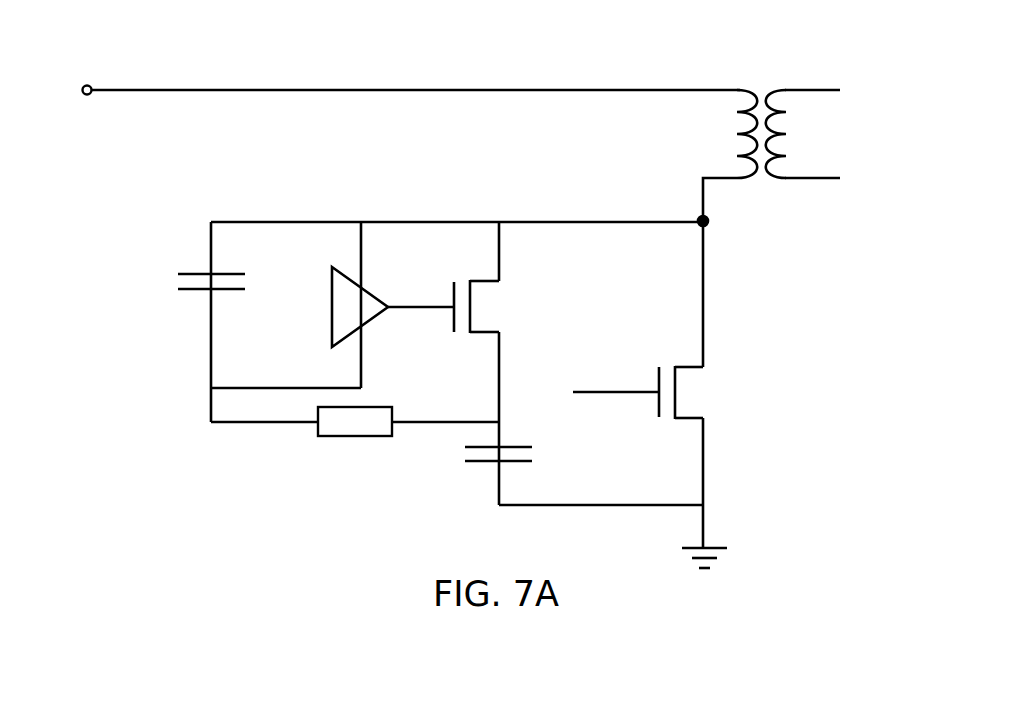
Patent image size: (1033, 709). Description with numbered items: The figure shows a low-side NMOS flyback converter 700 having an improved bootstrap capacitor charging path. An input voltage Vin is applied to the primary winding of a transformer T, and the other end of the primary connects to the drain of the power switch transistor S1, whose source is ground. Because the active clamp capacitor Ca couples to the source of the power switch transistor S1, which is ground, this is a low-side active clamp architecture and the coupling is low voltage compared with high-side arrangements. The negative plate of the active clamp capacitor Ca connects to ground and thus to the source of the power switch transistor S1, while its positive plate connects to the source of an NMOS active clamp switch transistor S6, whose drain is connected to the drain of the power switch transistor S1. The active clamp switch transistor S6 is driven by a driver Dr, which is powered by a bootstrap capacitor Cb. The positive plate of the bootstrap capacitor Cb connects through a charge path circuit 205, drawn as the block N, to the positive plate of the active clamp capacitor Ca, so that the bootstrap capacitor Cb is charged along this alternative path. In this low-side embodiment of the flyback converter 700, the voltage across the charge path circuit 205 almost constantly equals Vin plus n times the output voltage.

The flyback converter 700 is at (458, 62).
The charge path circuit 205 is at (355, 437).
The input voltage Vin is at (412, 73).
The transformer T is at (771, 137).
The bootstrap capacitor Cb is at (192, 322).
The driver Dr is at (332, 305).
The active clamp switch transistor S6 is at (492, 363).
The charge path circuit block N is at (355, 422).
The active clamp capacitor Ca is at (521, 458).
The power switch transistor S1 is at (653, 384).